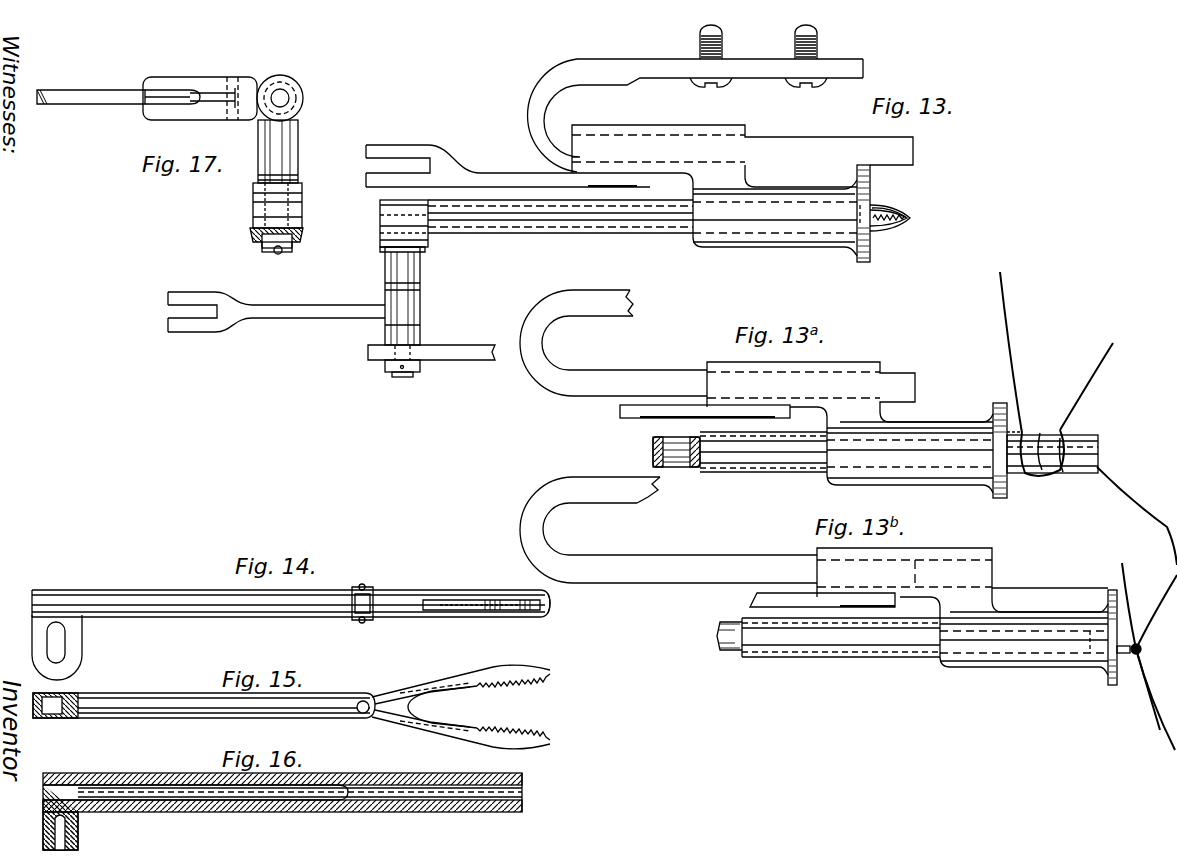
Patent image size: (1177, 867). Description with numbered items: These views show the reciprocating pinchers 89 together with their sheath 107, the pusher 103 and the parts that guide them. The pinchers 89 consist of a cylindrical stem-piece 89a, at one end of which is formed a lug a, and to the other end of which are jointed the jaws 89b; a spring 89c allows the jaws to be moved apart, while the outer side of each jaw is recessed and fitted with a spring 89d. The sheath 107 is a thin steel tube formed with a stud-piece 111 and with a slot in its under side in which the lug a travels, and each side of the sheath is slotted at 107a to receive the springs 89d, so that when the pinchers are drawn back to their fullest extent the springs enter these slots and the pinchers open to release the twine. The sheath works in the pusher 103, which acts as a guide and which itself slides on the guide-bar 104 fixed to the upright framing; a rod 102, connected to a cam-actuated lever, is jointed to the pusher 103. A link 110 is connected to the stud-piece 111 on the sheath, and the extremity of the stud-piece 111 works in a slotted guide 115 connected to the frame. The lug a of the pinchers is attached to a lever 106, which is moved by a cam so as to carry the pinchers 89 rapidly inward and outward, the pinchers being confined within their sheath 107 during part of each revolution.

In FIG. 13, the reciprocating pinchers 89 is at (903, 219).
In FIG. 13A, the reciprocating pinchers 89 is at (664, 449).
In FIG. 13B, the reciprocating pinchers 89 is at (774, 637).
In FIG. 14, the reciprocating pinchers 89 is at (563, 605).
In FIG. 14, the cylindrical stem-piece 89a is at (291, 635).
In FIG. 15, the cylindrical stem-piece 89a is at (204, 705).
In FIG. 17, the cylindrical stem-piece 89a is at (280, 98).
In FIG. 13, the jaws 89b is at (889, 219).
In FIG. 15, the jaws 89b is at (516, 707).
In FIG. 15, the jaw spring 89c is at (440, 707).
In FIG. 14, the jaw spring (recessed) 89d is at (455, 600).
In FIG. 15, the jaw spring (recessed) 89d is at (461, 708).
In FIG. 13, the rod 102 is at (508, 166).
In FIG. 13A, the rod 102 is at (705, 420).
In FIG. 13B, the rod 102 is at (822, 609).
In FIG. 13, the sliding pusher 103 is at (742, 203).
In FIG. 13A, the sliding pusher 103 is at (863, 439).
In FIG. 13B, the sliding pusher 103 is at (972, 628).
In FIG. 13, the guide-bar 104 is at (695, 98).
In FIG. 13A, the guide-bar 104 is at (613, 343).
In FIG. 13B, the guide-bar 104 is at (668, 530).
In FIG. 17, the lever 106 is at (113, 99).
In FIG. 13, the pincher-sheath 107 is at (500, 234).
In FIG. 13A, the pincher-sheath 107 is at (755, 470).
In FIG. 13B, the pincher-sheath 107 is at (941, 637).
In FIG. 16, the pincher-sheath 107 is at (282, 792).
In FIG. 17, the pincher-sheath 107 is at (290, 90).
In FIG. 16, the sheath slots 107a is at (214, 818).
In FIG. 13, the link 110 is at (276, 312).
In FIG. 13, the stud-piece 111 is at (418, 277).
In FIG. 16, the stud-piece 111 is at (76, 817).
In FIG. 17, the stud-piece 111 is at (292, 156).
In FIG. 13, the slotted guide 115 is at (431, 353).
In FIG. 17, the slotted guide 115 is at (290, 241).
In FIG. 17, the lug a is at (200, 98).